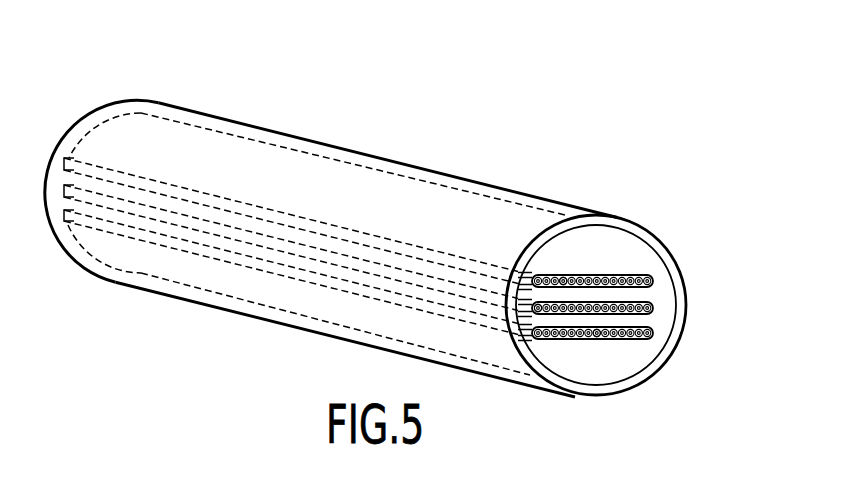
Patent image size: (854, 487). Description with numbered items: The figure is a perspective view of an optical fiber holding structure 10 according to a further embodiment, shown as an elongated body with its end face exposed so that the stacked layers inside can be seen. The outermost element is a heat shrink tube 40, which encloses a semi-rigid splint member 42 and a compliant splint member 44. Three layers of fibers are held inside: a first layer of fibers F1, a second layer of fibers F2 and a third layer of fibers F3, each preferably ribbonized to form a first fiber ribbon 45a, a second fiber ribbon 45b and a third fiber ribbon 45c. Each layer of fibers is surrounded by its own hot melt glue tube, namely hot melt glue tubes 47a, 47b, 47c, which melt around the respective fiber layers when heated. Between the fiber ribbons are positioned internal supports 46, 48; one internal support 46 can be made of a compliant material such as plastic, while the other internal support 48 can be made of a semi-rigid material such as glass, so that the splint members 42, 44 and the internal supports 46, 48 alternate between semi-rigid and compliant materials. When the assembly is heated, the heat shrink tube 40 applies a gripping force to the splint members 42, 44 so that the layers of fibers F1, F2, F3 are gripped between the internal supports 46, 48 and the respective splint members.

The optical fiber holding structure 10 is at (433, 117).
The heat shrink tube 40 is at (652, 229).
The semi-rigid splint member 42 is at (636, 252).
The compliant splint member 44 is at (608, 374).
The first fiber ribbon 45a is at (620, 260).
The second fiber ribbon 45b is at (559, 323).
The third fiber ribbon 45c is at (630, 350).
The internal support 46 is at (657, 294).
The hot melt glue tube 47a is at (653, 282).
The hot melt glue tube 47b is at (657, 310).
The hot melt glue tube 47c is at (655, 338).
The internal support 48 is at (668, 338).
The first layer of fibers F1 is at (560, 280).
The second layer of fibers F2 is at (597, 334).
The third layer of fibers F3 is at (540, 305).